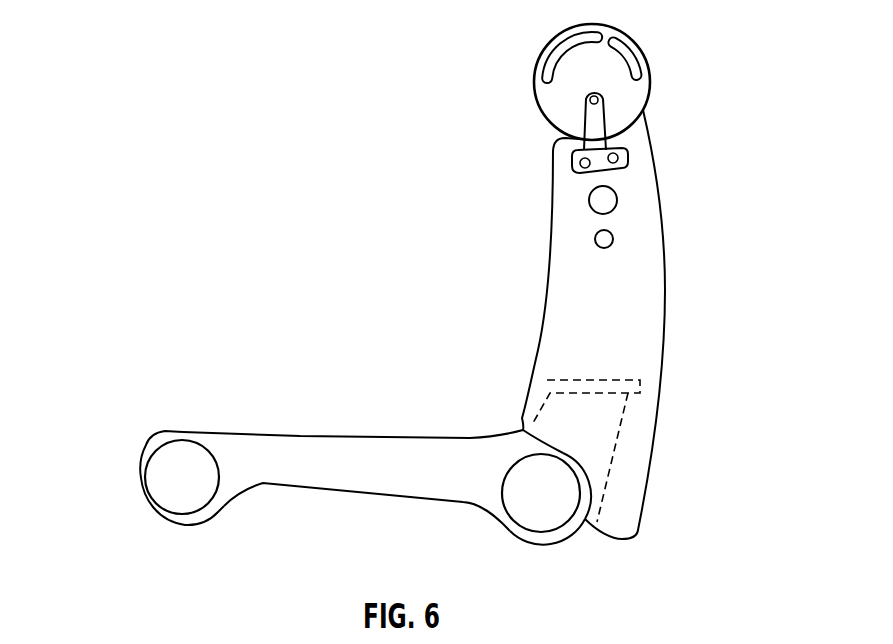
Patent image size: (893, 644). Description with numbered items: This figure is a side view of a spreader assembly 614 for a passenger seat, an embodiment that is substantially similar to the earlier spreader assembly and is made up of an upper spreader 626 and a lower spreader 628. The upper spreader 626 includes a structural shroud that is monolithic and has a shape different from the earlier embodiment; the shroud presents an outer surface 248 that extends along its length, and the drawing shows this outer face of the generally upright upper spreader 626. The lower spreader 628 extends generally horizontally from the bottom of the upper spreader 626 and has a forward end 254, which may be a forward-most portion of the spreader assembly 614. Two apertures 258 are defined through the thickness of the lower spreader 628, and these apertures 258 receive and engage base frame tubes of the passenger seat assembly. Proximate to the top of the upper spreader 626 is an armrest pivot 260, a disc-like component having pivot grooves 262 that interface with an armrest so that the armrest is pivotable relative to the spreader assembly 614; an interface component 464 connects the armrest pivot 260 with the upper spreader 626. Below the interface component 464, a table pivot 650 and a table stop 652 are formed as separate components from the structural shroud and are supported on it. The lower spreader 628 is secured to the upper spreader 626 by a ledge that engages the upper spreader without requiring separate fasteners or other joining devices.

The spreader assembly 614 is at (233, 130).
The outer surface 248 is at (650, 333).
The forward end 254 is at (138, 478).
The apertures 258 is at (175, 500).
The armrest pivot 260 is at (640, 103).
The pivot grooves 262 is at (550, 60).
The interface component 464 is at (595, 147).
The upper spreader 626 is at (557, 316).
The lower spreader 628 is at (305, 452).
The table pivot 650 is at (597, 243).
The table stop 652 is at (615, 203).